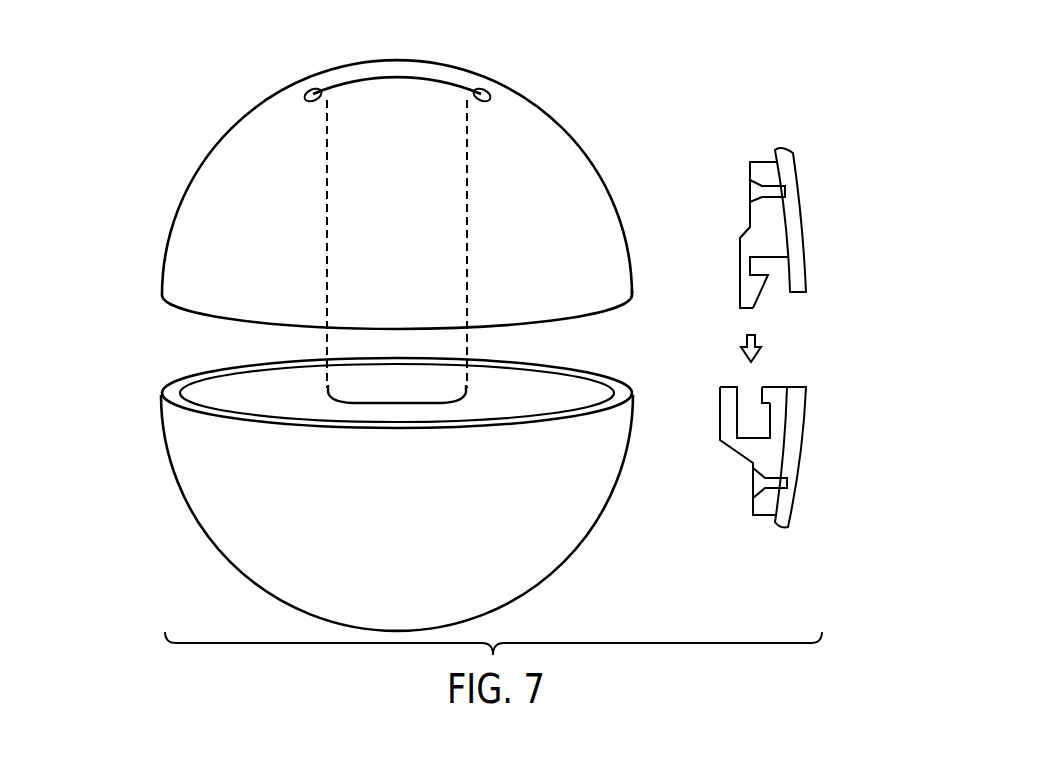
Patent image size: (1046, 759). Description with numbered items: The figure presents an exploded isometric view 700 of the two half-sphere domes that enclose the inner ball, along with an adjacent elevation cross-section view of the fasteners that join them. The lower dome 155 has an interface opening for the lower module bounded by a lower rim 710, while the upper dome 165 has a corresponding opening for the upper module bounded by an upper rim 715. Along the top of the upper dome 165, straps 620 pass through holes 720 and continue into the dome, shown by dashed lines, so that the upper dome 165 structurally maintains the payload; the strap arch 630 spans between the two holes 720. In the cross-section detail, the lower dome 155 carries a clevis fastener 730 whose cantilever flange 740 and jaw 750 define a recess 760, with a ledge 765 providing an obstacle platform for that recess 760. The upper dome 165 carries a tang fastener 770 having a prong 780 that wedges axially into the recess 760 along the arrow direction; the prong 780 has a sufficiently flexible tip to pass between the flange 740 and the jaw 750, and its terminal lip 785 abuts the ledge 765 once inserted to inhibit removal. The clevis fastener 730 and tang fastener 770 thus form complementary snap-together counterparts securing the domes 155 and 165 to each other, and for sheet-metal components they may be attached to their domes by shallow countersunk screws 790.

The exploded isometric view 700 is at (615, 104).
The lower rim 710 is at (145, 390).
The upper rim 715 is at (613, 328).
The holes 720 is at (313, 69).
The handle strap 630 is at (438, 77).
The straps 620 is at (345, 381).
The upper dome 165 is at (413, 276).
The lower dome 155 is at (411, 536).
The shallow countersunk screws 790 is at (750, 191).
The tang fastener 770 is at (748, 228).
The prong 780 is at (738, 291).
The terminal lip 785 is at (760, 253).
The recess 760 is at (740, 378).
The jaw 750 is at (775, 368).
The cantilever flange 740 is at (720, 402).
The clevis fastener 730 is at (720, 440).
The ledge 765 is at (766, 420).